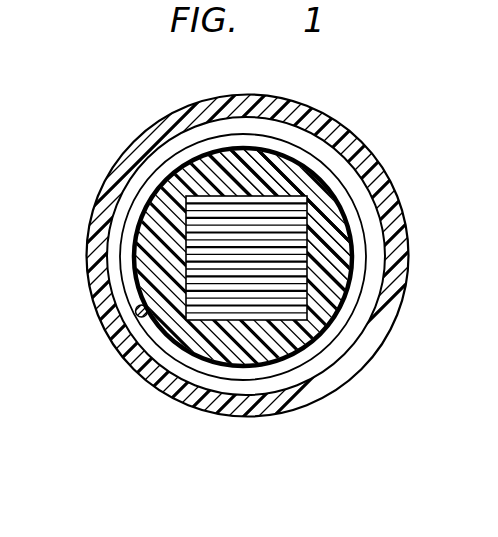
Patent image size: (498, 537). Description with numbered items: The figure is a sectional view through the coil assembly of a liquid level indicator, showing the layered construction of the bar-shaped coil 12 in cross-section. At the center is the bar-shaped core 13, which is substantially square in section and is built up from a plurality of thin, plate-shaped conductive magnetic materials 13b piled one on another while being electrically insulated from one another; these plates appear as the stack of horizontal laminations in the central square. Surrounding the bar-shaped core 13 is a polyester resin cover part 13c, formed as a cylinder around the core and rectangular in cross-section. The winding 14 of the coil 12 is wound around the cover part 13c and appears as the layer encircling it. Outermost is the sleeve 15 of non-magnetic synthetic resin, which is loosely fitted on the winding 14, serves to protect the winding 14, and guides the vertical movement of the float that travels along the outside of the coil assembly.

The bar-shaped coil 12 is at (304, 96).
The bar-shaped core 13 is at (308, 235).
The thin plate-shaped conductive magnetic materials 13b is at (308, 277).
The polyester resin cover part 13c is at (340, 223).
The winding 14 is at (130, 285).
The sleeve 15 is at (136, 153).